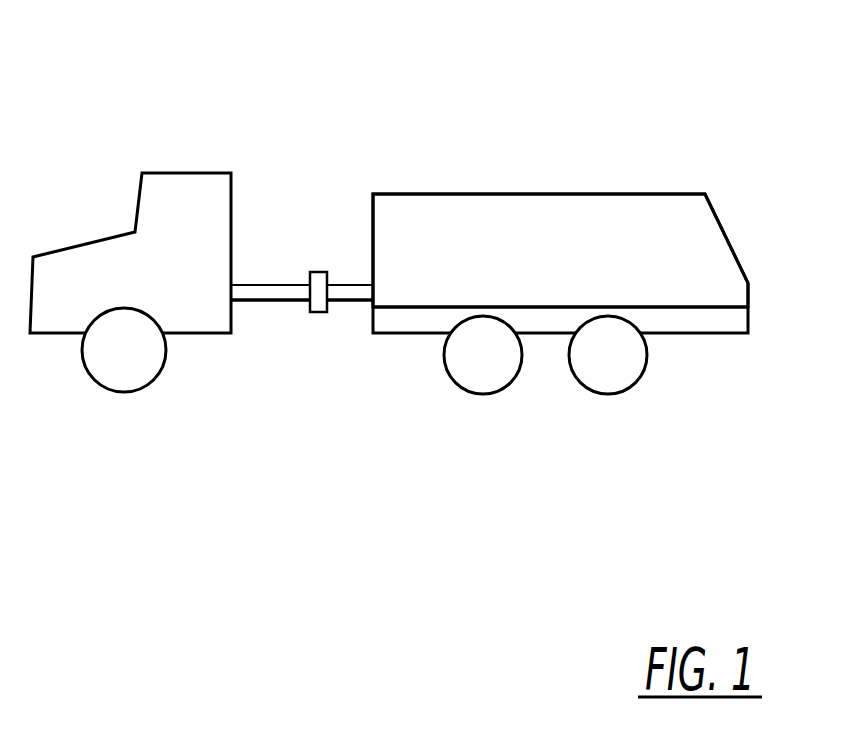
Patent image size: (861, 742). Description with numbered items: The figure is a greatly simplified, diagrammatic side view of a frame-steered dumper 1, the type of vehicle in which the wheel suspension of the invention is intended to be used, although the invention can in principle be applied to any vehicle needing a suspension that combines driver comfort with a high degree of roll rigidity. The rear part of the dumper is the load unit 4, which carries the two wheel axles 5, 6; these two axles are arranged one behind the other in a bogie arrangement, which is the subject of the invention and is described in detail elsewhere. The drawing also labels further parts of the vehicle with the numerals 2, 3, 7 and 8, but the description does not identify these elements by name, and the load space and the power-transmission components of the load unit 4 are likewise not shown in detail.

The frame-steered dumper 1 is at (270, 140).
The towing vehicle cab 2 is at (192, 192).
The towing vehicle wheel 3 is at (127, 375).
The load unit 4 is at (410, 322).
The wheel axle 5 is at (483, 378).
The wheel axle 6 is at (608, 378).
The coupling 7 is at (320, 305).
The trailer load body 8 is at (528, 222).